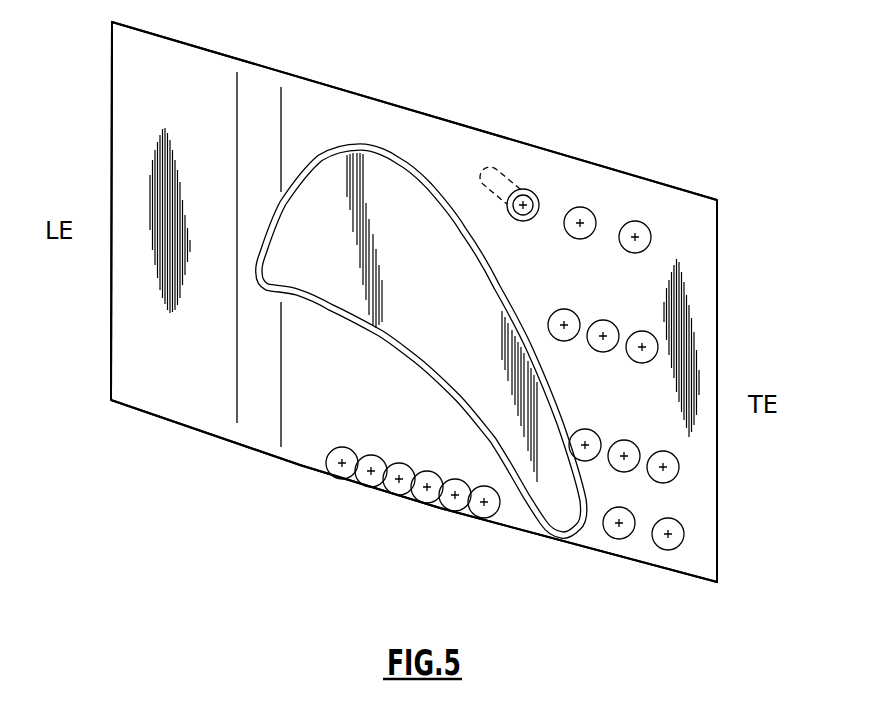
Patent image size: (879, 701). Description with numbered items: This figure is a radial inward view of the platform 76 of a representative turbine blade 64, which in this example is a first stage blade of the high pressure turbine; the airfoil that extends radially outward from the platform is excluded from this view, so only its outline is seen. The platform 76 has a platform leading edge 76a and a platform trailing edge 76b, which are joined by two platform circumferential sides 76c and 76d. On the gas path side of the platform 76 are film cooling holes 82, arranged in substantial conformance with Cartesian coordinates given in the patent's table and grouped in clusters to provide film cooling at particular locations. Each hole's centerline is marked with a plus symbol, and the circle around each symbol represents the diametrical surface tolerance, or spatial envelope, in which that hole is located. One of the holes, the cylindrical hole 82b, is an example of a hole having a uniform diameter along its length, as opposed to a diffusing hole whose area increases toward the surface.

The turbine blade 64 is at (170, 480).
The platform 76 is at (722, 259).
The platform leading edge 76a is at (112, 82).
The platform trailing edge 76b is at (718, 355).
The platform circumferential side 76c is at (455, 123).
The platform circumferential side 76d is at (300, 468).
The film cooling holes 82 is at (602, 210).
The cylindrical hole 82b is at (521, 176).